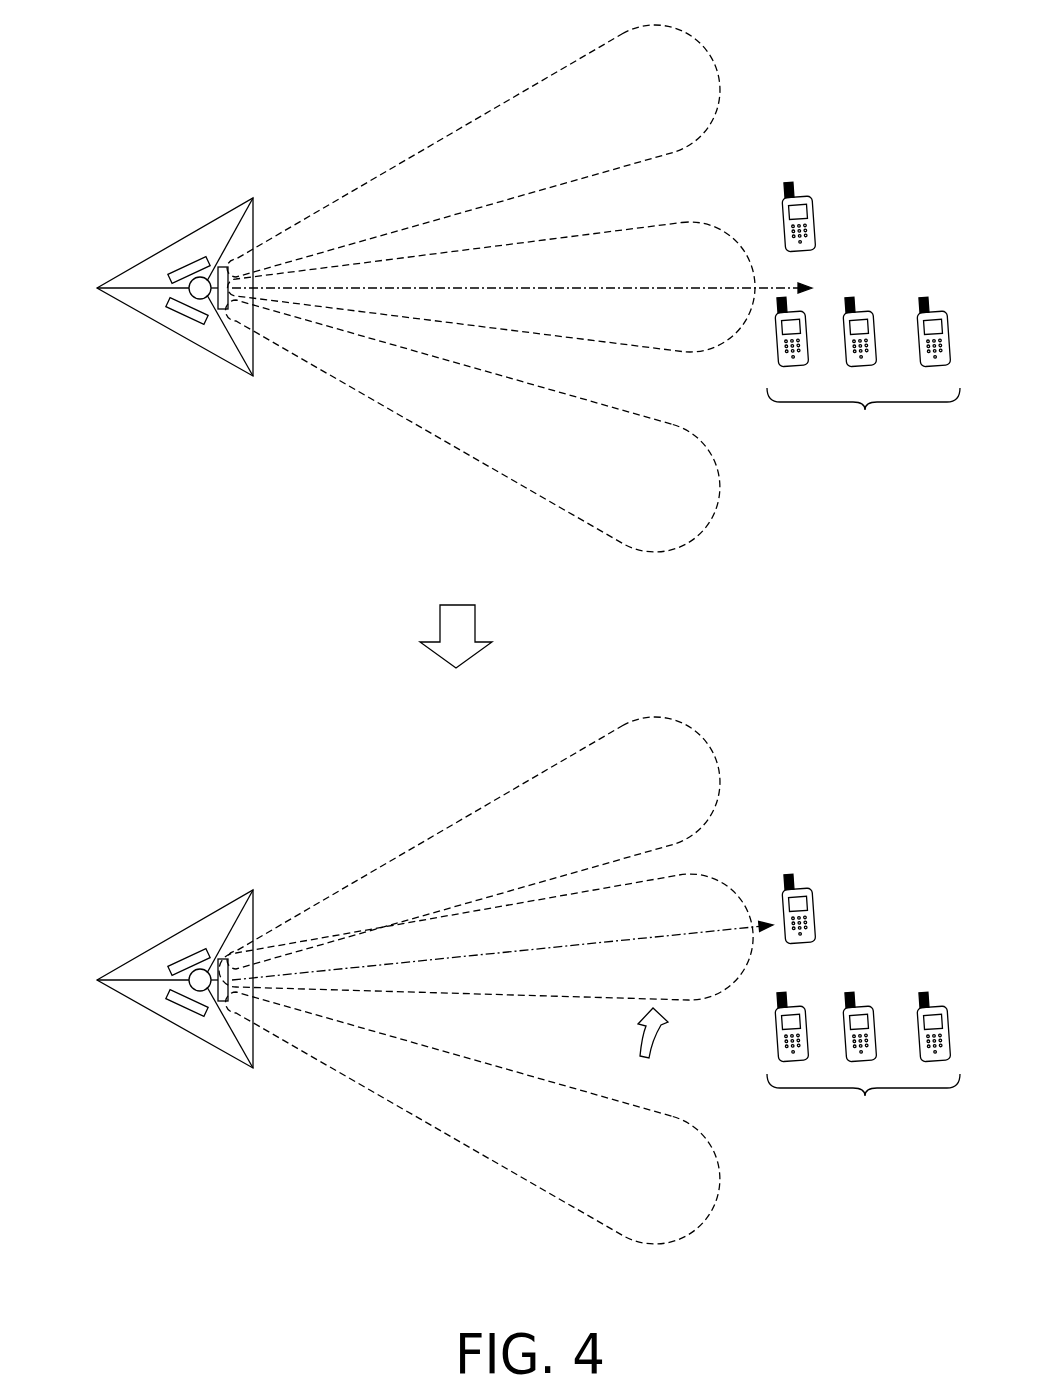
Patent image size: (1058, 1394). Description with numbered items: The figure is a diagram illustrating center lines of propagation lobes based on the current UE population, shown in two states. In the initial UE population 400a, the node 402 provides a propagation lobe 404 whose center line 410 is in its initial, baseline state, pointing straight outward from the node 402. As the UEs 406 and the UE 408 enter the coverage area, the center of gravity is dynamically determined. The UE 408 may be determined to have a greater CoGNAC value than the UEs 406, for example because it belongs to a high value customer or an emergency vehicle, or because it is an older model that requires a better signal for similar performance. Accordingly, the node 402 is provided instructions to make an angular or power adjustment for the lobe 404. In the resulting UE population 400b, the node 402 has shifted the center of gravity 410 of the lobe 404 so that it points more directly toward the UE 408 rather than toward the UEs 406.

The UE population 400a is at (100, 77).
The UE population 400b is at (100, 801).
The node 402 is at (227, 324).
The propagation lobe 404 is at (560, 335).
The UEs 406 is at (863, 710).
The UE 408 is at (815, 221).
The center line 410 is at (596, 290).